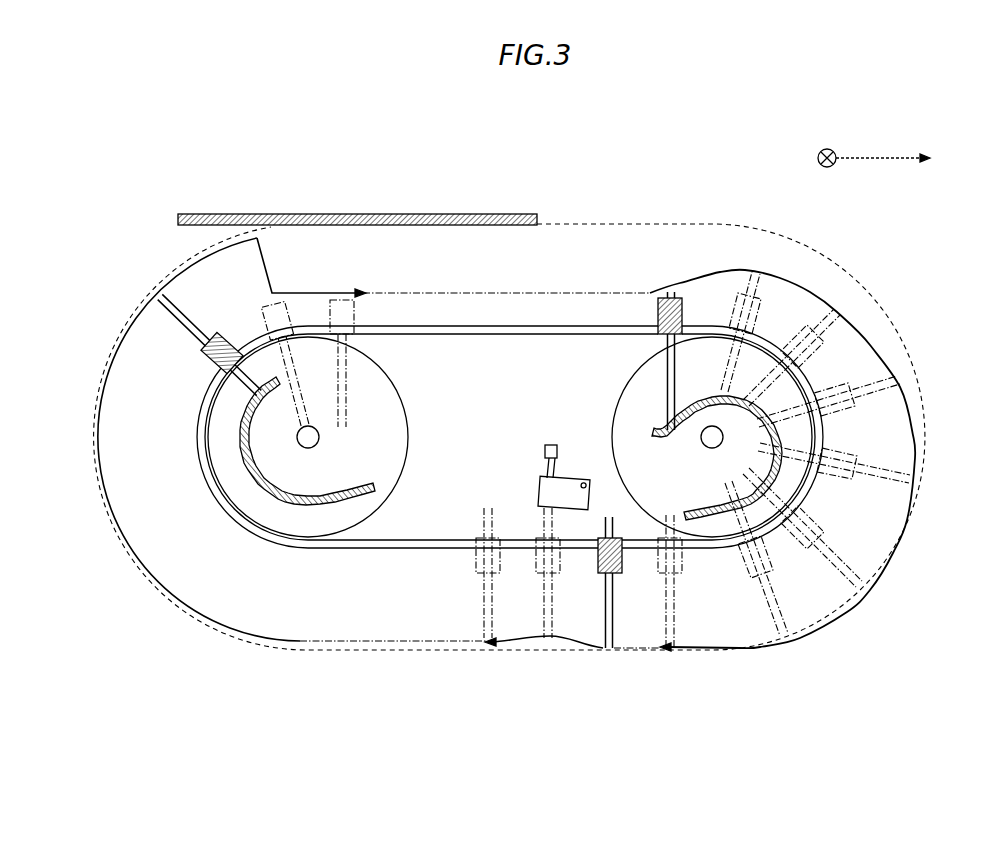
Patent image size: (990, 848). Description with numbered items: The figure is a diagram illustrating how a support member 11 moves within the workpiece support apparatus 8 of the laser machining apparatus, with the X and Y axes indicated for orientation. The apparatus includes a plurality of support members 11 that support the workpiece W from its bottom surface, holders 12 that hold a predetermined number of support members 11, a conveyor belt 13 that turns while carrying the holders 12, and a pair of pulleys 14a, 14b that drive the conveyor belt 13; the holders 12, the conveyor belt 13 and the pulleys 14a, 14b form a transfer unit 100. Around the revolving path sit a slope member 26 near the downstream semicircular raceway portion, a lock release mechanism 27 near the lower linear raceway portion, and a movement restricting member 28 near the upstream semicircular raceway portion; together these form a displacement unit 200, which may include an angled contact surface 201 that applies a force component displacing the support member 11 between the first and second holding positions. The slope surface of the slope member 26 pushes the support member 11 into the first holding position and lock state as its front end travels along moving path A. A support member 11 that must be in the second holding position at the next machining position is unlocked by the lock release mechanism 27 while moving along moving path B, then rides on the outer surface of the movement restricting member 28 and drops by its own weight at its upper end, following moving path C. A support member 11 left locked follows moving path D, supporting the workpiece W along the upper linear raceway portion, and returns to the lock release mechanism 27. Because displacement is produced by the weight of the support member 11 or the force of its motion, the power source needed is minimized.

The workpiece support apparatus 8 is at (620, 186).
The support member 11 is at (178, 314).
The holder 12 is at (210, 358).
The conveyor belt 13 is at (367, 549).
The pulley 14a is at (406, 420).
The pulley 14b is at (614, 420).
The slope member 26 is at (810, 458).
The lock release mechanism 27 is at (544, 479).
The movement restricting member 28 is at (240, 456).
The transfer unit 100 is at (141, 638).
The displacement unit 200 is at (849, 634).
The contact surface 201 is at (783, 437).
The workpiece W is at (228, 213).
The moving path A is at (880, 352).
The moving path B is at (525, 649).
The moving path C is at (187, 273).
The moving path D is at (118, 532).
The X axis X is at (827, 146).
The Y axis Y is at (891, 158).